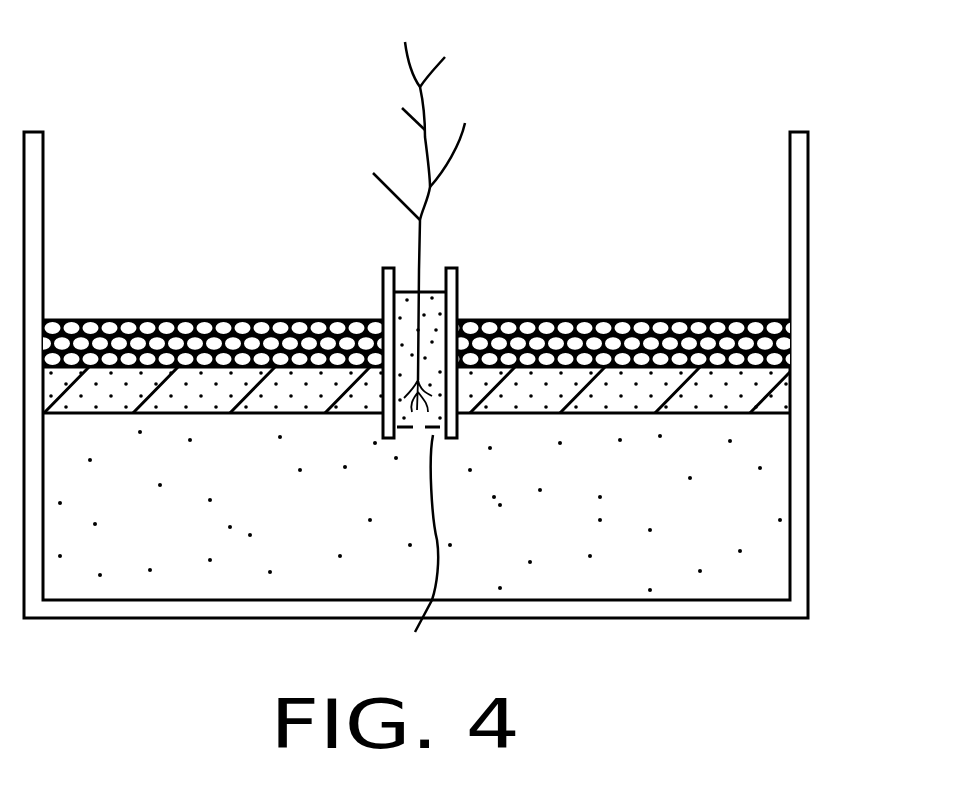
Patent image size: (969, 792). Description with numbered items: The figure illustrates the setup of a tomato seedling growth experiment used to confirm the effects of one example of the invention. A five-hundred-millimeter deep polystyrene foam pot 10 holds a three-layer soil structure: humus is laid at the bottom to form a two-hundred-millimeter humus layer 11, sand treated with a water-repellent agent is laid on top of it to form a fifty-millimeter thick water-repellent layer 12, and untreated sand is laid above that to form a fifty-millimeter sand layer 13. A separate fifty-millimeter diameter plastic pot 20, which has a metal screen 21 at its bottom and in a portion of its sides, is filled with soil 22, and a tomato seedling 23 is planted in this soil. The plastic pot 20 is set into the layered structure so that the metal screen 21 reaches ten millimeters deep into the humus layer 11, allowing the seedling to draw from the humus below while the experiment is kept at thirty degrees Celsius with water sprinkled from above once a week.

The polystyrene foam pot 10 is at (809, 160).
The humus layer 11 is at (773, 503).
The water-repellent layer 12 is at (783, 392).
The sand layer 13 is at (792, 331).
The plastic pot 20 is at (462, 292).
The metal screen 21 is at (411, 553).
The soil 22 is at (400, 307).
The tomato seedling 23 is at (432, 105).